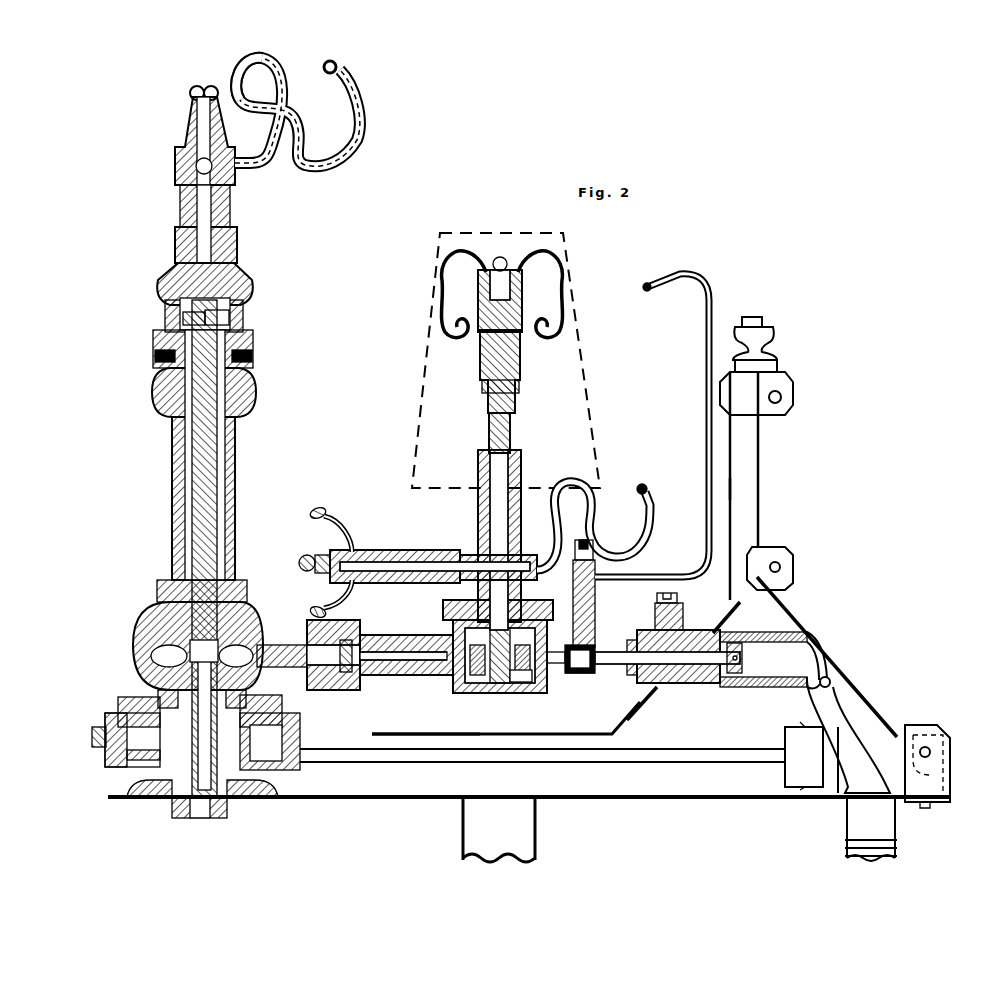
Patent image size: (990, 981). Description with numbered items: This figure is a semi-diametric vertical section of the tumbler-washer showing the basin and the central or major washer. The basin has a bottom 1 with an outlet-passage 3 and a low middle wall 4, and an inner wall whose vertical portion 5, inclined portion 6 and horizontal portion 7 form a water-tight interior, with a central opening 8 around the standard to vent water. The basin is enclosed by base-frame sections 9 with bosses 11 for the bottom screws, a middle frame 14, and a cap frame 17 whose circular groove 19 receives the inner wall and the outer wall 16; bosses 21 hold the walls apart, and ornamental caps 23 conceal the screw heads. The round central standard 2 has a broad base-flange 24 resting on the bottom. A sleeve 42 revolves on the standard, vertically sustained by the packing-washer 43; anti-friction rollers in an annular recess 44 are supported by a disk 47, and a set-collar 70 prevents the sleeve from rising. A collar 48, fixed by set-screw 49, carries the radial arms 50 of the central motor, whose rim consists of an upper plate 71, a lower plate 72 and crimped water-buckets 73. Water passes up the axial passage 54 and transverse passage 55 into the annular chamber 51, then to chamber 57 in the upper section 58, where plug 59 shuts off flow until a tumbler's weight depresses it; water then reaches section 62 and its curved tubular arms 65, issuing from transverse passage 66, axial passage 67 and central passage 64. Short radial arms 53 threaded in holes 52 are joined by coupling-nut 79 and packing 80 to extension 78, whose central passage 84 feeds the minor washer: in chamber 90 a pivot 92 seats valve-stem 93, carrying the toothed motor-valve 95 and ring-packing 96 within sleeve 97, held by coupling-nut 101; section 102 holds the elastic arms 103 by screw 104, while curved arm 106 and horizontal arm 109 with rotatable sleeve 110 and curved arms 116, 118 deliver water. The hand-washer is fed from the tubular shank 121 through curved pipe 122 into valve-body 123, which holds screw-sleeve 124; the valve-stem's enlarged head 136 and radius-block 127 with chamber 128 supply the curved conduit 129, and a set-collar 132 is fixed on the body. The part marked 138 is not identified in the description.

The bottom 1 is at (529, 806).
The central standard 2 is at (204, 465).
The outlet-passage 3 is at (499, 829).
The middle wall 4 is at (790, 703).
The vertical portion of inner wall 5 is at (725, 489).
The inclined portion of inner wall 6 is at (682, 661).
The horizontal portion of inner wall 7 is at (506, 718).
The central opening 8 is at (416, 736).
The base frame sections 9 is at (950, 752).
The bosses 11 is at (928, 765).
The middle frame sections 14 is at (793, 571).
The outer wall upper section 16 is at (757, 486).
The cap frame sections 17 is at (793, 396).
The circular groove 19 is at (827, 657).
The bosses 21 is at (756, 393).
The ornamental caps 23 is at (758, 341).
The base-flange 24 is at (160, 785).
The sleeve 42 is at (172, 500).
The packing-washer 43 is at (158, 695).
The annular recess 44 is at (132, 740).
The disk 47 is at (808, 697).
The collar 48 is at (300, 730).
The set-screw 49 is at (92, 740).
The radial arms 50 is at (542, 754).
The annular chamber 51 is at (202, 656).
The threaded holes 52 is at (198, 635).
The short radial arms 53 is at (290, 640).
The axial passage 54 is at (199, 559).
The transverse passage 55 is at (204, 651).
The chamber 57 is at (243, 312).
The upper section of standard 58 is at (237, 247).
The plug 59 is at (250, 276).
The upper section 62 is at (193, 142).
The central passage 64 is at (204, 86).
The tubular arms 65 is at (297, 112).
The transverse passage 66 is at (254, 69).
The axial passage 67 is at (325, 58).
The set-collar 70 is at (165, 318).
The upper circular plate 71 is at (800, 718).
The lower plate 72 is at (801, 785).
The water-buckets 73 is at (804, 757).
The extension 78 is at (406, 649).
The coupling-nut 79 is at (325, 690).
The packing 80 is at (346, 672).
The central passage 84 is at (400, 665).
The chamber 90 is at (500, 683).
The stud or pivot 92 is at (522, 675).
The valve-stem 93 is at (510, 435).
The motor-valve 95 is at (521, 676).
The ring-packing 96 is at (478, 675).
The sleeve 97 is at (478, 477).
The coupling-nut 101 is at (453, 612).
The enlarged upper section 102 is at (520, 362).
The elastic arms 103 is at (507, 294).
The screw 104 is at (500, 288).
The curved tubular arm 106 is at (593, 526).
The horizontal arm 109 is at (438, 557).
The sleeve 110 is at (379, 559).
The curved tubular arm 116 is at (329, 599).
The curved tubular arm 118 is at (329, 529).
The tubular shank 121 is at (871, 829).
The curved pipe 122 is at (848, 735).
The valve-body 123 is at (755, 667).
The screw-sleeve 124 is at (645, 630).
The radius-block 127 is at (582, 681).
The chamber 128 is at (582, 659).
The curved conduit 129 is at (595, 612).
The set-collar 132 is at (683, 612).
The enlarged head 136 is at (742, 656).
The stub 138 is at (561, 647).